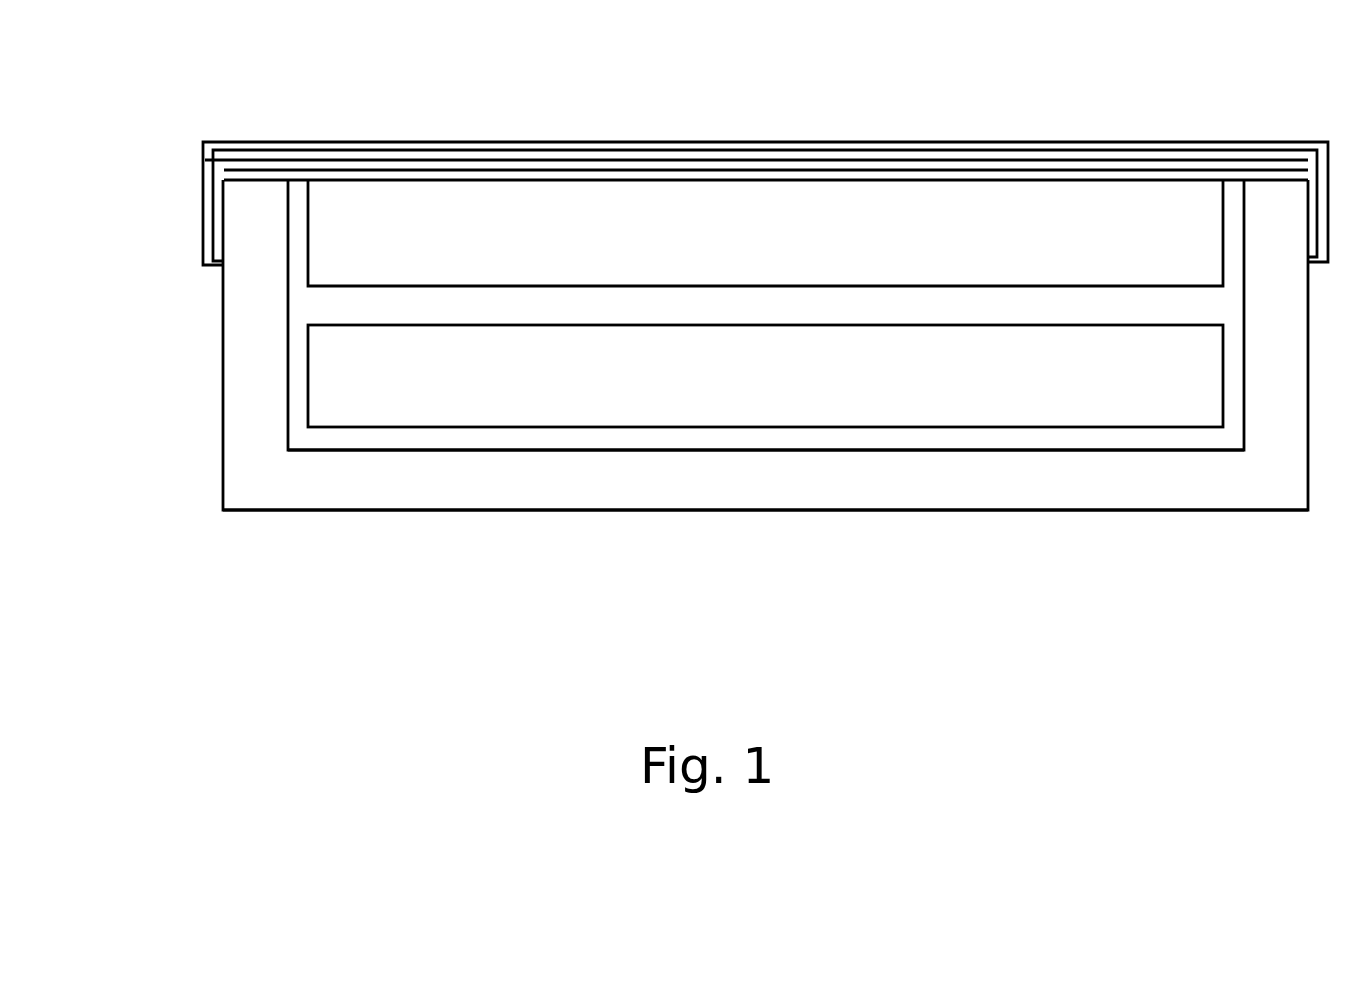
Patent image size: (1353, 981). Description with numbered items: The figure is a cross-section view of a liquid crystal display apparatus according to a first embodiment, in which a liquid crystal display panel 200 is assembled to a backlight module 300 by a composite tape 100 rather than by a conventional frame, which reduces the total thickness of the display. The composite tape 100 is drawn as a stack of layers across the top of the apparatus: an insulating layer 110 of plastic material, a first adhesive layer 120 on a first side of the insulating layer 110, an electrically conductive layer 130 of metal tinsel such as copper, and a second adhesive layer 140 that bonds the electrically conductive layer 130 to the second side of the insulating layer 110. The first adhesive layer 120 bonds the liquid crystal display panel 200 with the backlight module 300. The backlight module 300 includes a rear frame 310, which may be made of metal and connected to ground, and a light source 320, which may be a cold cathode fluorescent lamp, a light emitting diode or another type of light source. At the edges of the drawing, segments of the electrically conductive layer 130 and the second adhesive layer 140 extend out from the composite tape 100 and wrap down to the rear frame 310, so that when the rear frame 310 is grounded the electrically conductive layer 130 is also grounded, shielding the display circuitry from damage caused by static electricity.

The composite tape 100 is at (1224, 145).
The insulating layer 110 is at (224, 180).
The first adhesive layer 120 is at (243, 178).
The electrically conductive layer 130 is at (307, 147).
The second adhesive layer 140 is at (205, 160).
The liquid crystal display panel 200 is at (808, 247).
The backlight module 300 is at (686, 533).
The rear frame 310 is at (1068, 492).
The light source 320 is at (808, 392).